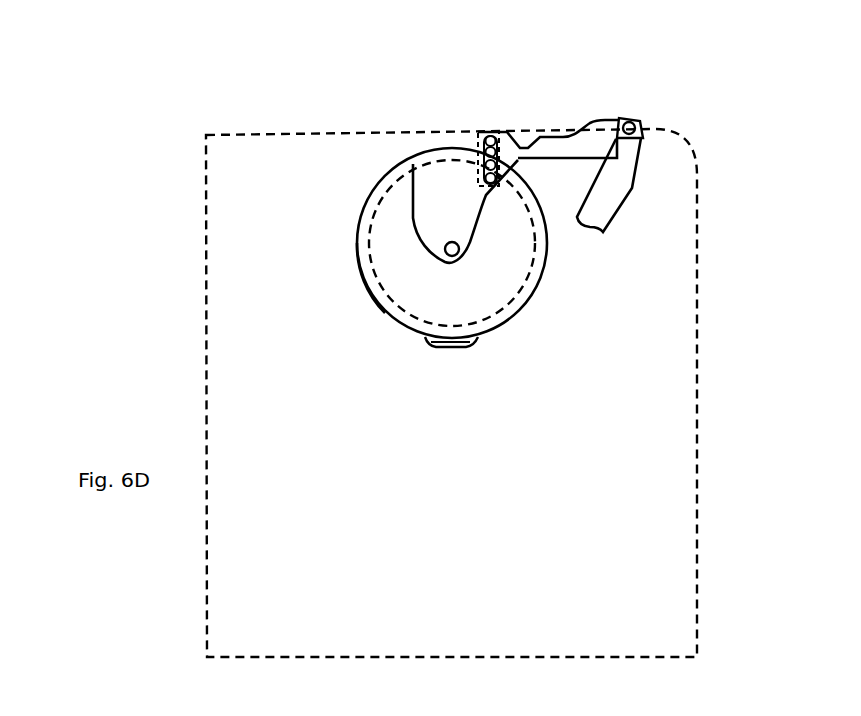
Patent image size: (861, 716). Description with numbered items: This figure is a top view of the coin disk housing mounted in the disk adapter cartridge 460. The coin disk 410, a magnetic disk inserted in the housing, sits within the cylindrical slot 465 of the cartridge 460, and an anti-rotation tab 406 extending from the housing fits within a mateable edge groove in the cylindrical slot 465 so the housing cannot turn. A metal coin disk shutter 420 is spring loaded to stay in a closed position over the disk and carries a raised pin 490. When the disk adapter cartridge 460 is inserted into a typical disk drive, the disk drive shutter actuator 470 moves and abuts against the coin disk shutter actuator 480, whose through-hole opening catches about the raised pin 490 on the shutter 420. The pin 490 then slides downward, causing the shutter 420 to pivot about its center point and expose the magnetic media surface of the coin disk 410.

The coin disk 410 is at (362, 233).
The coin disk shutter 420 is at (440, 200).
The coin disk shutter actuator 480 is at (527, 135).
The disk drive shutter actuator 470 is at (641, 122).
The raised pin 490 is at (500, 160).
The cylindrical slot 465 is at (372, 297).
The anti-rotation tab 406 is at (475, 342).
The disk adapter cartridge 460 is at (447, 655).